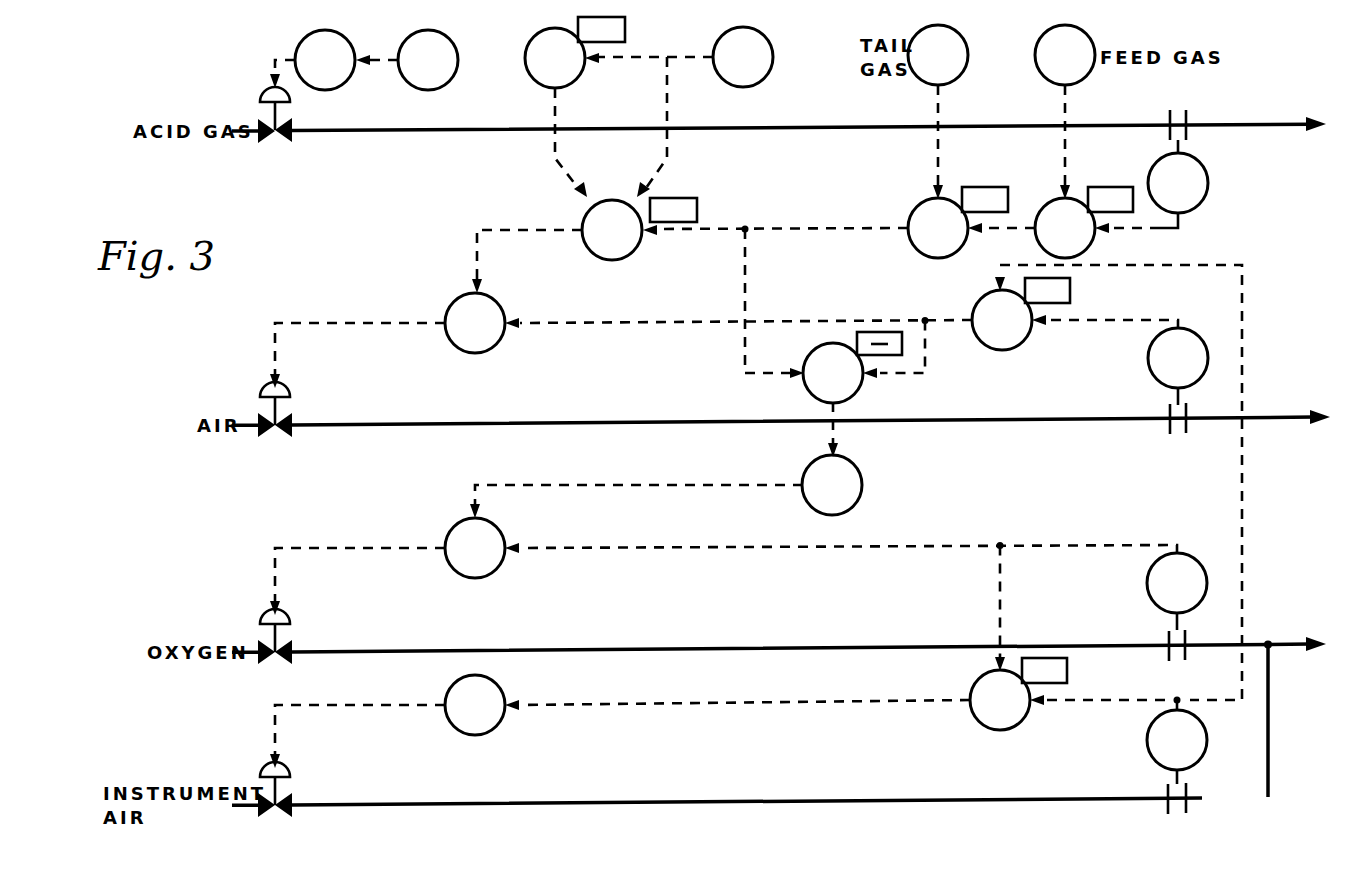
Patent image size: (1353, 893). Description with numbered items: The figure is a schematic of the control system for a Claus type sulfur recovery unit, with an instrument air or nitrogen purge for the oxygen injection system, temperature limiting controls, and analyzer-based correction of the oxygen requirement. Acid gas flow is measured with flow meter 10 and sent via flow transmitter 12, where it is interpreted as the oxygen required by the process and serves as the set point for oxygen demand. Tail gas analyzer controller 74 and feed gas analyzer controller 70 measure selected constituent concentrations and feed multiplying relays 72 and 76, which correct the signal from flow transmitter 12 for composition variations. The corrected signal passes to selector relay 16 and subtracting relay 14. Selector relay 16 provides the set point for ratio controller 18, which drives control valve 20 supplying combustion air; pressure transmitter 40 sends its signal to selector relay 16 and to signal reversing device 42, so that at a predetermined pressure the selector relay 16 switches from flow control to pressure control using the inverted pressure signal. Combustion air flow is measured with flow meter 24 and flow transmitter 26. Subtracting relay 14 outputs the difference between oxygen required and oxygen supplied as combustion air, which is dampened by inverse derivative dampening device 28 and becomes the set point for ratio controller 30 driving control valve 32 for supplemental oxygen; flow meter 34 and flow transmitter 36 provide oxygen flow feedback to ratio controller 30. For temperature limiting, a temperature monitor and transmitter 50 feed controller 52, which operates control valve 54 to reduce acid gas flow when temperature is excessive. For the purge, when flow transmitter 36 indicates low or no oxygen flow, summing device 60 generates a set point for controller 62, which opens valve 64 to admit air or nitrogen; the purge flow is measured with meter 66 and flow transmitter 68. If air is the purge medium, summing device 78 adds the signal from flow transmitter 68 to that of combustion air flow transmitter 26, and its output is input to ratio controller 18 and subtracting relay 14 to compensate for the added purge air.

The flow meter 10 is at (1188, 116).
The flow transmitter 12 is at (1203, 200).
The subtracting relay 14 is at (808, 384).
The selector relay 16 is at (632, 254).
The ratio controller 18 is at (497, 345).
The control valve 20 is at (292, 390).
The flow meter 24 is at (1166, 423).
The flow transmitter 26 is at (1150, 358).
The inverse derivative dampening device 28 is at (862, 485).
The ratio controller 30 is at (497, 570).
The control valve 32 is at (292, 613).
The flow meter 34 is at (1172, 649).
The flow transmitter 36 is at (1147, 583).
The pressure transmitter 40 is at (734, 81).
The signal reversing device 42 is at (575, 80).
The temperature transmitter TT 50 is at (448, 81).
The controller 52 is at (343, 81).
The control valve 54 is at (270, 88).
The summing device 60 is at (977, 723).
The controller 62 is at (497, 727).
The valve 64 is at (292, 767).
The meter 66 is at (1190, 790).
The flow transmitter 68 is at (1147, 740).
The feed gas analyzer controller 70 is at (1057, 79).
The multiplying relay 72 is at (1050, 196).
The tail gas analyzer controller 74 is at (957, 78).
The multiplying relay 76 is at (928, 199).
The summing device 78 is at (1022, 344).